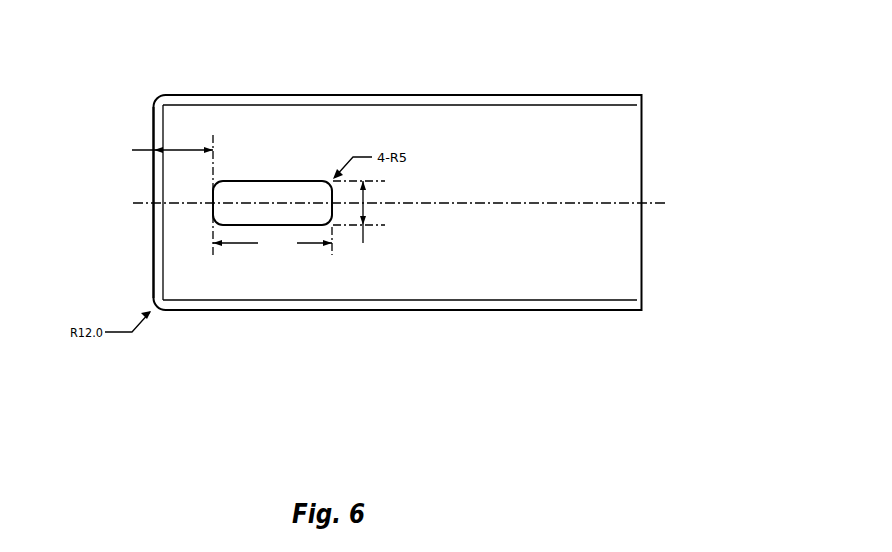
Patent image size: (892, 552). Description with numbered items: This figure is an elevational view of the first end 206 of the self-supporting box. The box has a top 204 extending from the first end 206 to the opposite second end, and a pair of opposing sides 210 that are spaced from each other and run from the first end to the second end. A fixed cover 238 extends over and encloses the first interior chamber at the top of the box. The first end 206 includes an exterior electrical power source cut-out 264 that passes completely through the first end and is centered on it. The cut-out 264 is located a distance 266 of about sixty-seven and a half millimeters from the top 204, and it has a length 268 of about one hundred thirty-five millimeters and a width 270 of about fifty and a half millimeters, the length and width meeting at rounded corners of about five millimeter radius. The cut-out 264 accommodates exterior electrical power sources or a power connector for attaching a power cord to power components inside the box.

The opposing side 210 is at (400, 95).
The fixed cover 238 is at (157, 177).
The top 204 is at (152, 248).
The first end 206 is at (218, 290).
The exterior electrical power source cut-out 264 is at (292, 181).
The distance 266 is at (195, 150).
The length 268 is at (298, 243).
The width 270 is at (363, 210).